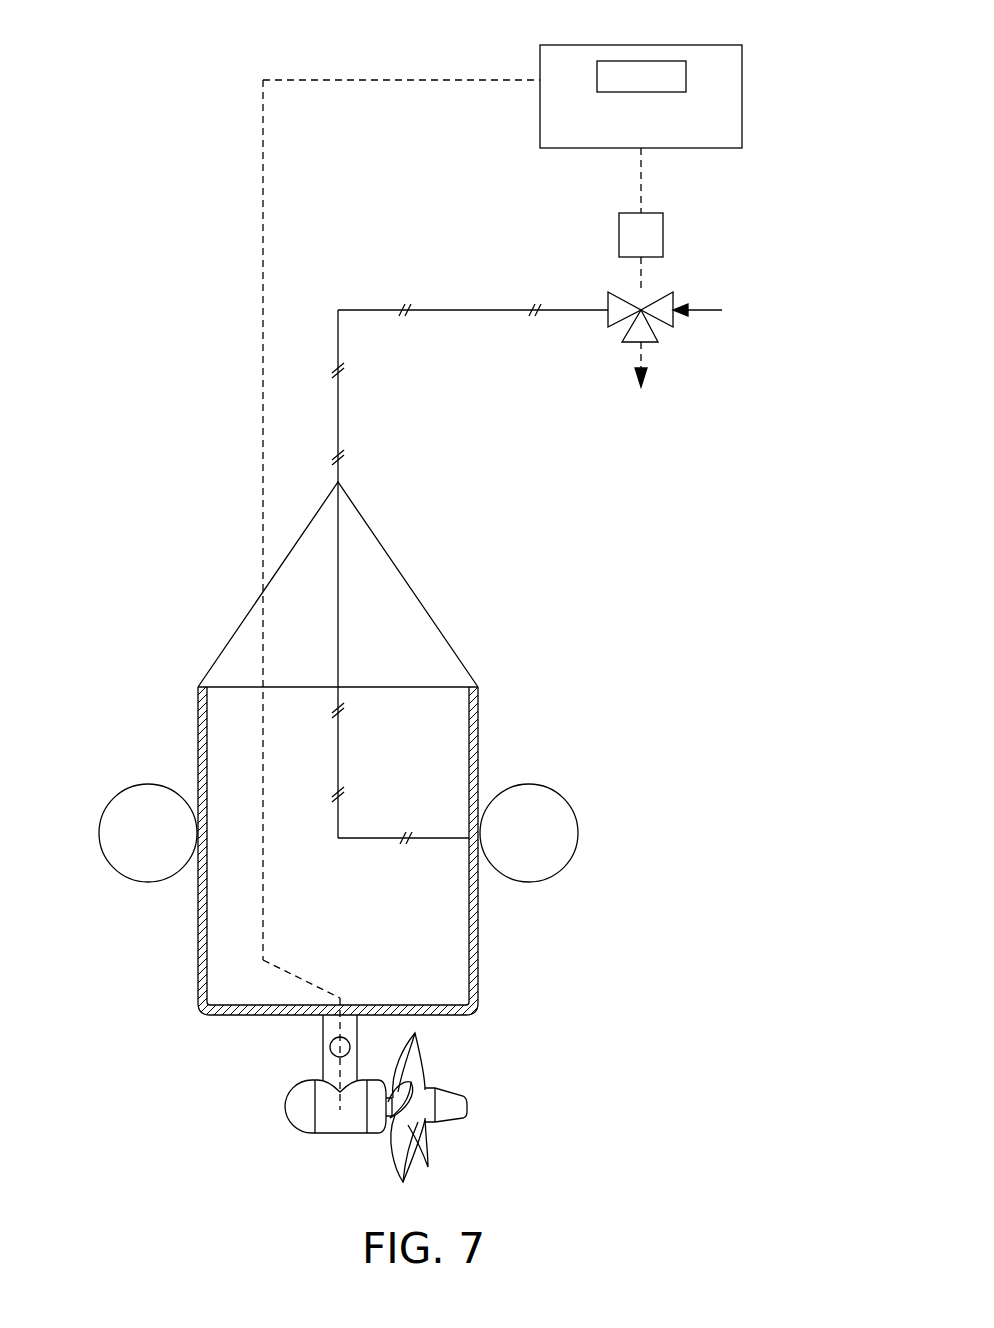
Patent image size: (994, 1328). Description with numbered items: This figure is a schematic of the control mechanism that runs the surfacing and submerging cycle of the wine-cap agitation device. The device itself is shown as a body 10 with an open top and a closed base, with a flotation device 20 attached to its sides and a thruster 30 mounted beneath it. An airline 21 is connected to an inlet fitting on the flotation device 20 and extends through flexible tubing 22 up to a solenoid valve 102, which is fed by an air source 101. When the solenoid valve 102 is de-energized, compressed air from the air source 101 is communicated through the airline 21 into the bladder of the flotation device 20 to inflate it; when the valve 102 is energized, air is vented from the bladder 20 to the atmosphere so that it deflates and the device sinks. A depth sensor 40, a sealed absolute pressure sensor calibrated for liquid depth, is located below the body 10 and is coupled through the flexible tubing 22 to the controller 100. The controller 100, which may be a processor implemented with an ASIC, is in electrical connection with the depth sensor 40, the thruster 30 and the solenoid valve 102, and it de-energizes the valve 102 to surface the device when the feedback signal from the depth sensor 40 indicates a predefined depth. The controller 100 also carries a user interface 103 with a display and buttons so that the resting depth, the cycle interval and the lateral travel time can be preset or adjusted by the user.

The body 10 is at (197, 975).
The flotation device 20 is at (125, 879).
The airline 21 is at (338, 758).
The flexible tubing 22 is at (355, 310).
The thruster 30 is at (337, 1133).
The depth sensor 40 is at (350, 1044).
The controller 100 is at (710, 148).
The air source 101 is at (757, 326).
The solenoid valve 102 is at (633, 343).
The user interface 103 is at (686, 77).